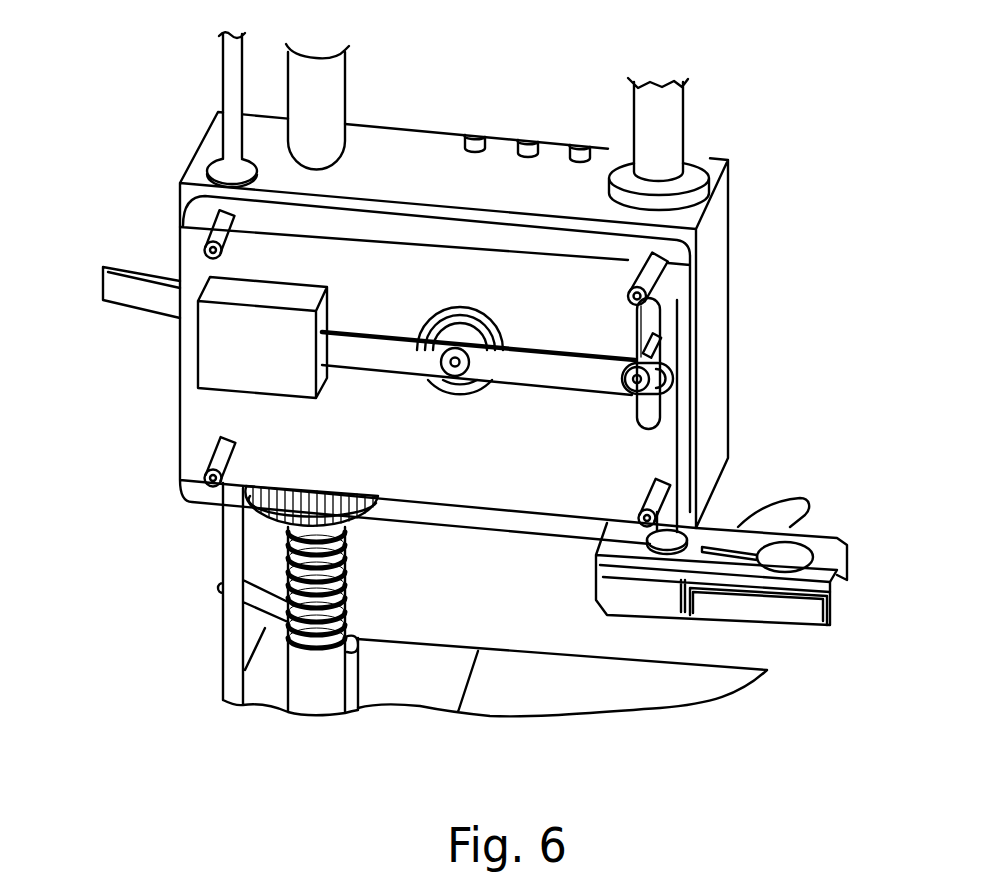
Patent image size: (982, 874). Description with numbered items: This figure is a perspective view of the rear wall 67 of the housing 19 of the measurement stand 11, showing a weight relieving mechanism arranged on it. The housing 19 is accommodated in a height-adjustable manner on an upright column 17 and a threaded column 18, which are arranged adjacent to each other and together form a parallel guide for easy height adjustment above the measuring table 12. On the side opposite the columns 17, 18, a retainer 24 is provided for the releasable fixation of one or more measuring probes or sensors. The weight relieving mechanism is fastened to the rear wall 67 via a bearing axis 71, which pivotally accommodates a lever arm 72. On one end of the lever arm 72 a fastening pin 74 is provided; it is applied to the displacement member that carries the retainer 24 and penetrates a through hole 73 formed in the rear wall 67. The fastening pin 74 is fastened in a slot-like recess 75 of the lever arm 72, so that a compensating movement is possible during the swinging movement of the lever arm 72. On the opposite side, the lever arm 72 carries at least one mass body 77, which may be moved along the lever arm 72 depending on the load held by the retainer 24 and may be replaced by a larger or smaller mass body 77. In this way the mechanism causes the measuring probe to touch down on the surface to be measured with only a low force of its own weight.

The measurement stand 11 is at (108, 213).
The measuring table 12 is at (500, 660).
The upright column 17 is at (230, 82).
The threaded column 18 is at (330, 90).
The housing 19 is at (448, 108).
The retainer 24 is at (733, 505).
The rear wall 67 is at (164, 441).
The bearing axis 71 is at (455, 368).
The lever arm 72 is at (373, 363).
The through hole 73 is at (654, 316).
The fastening pin 74 is at (660, 345).
The slot-like recess 75 is at (585, 385).
The mass body 77 is at (217, 338).